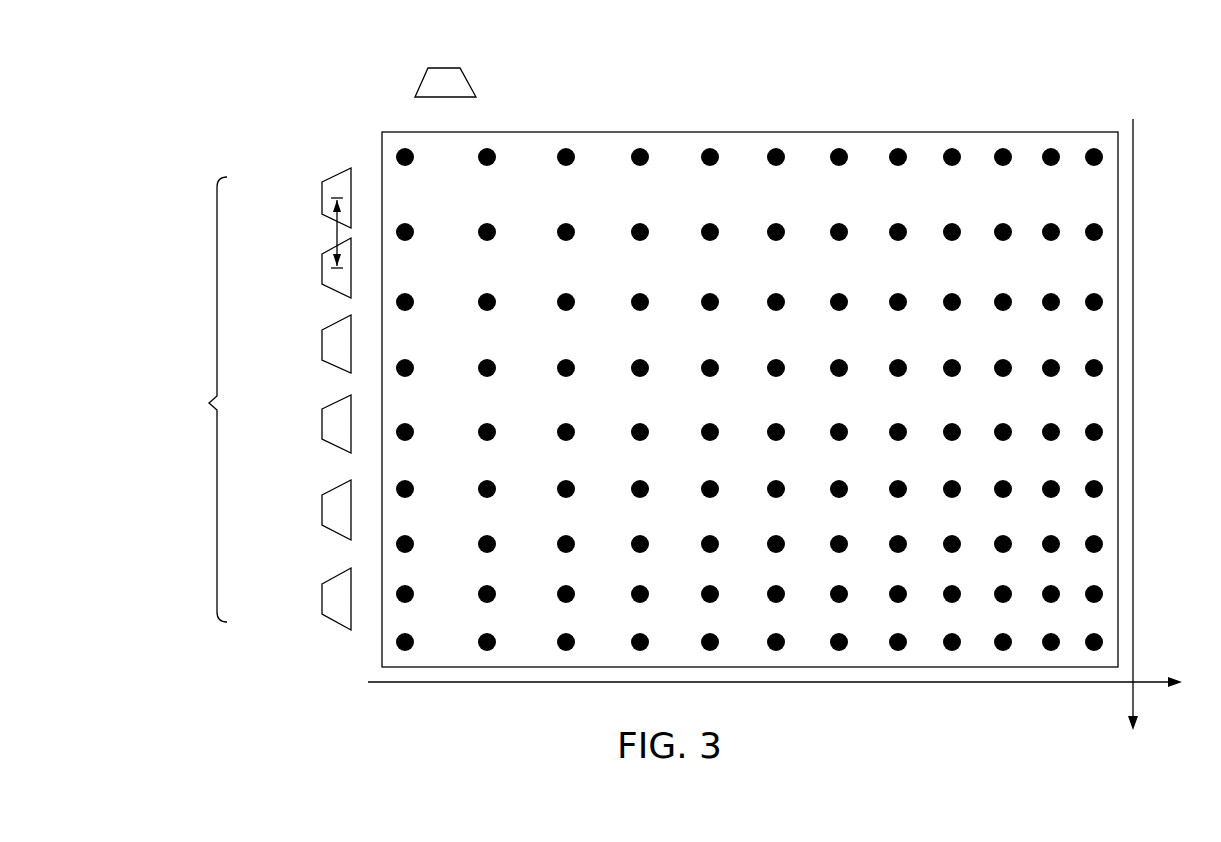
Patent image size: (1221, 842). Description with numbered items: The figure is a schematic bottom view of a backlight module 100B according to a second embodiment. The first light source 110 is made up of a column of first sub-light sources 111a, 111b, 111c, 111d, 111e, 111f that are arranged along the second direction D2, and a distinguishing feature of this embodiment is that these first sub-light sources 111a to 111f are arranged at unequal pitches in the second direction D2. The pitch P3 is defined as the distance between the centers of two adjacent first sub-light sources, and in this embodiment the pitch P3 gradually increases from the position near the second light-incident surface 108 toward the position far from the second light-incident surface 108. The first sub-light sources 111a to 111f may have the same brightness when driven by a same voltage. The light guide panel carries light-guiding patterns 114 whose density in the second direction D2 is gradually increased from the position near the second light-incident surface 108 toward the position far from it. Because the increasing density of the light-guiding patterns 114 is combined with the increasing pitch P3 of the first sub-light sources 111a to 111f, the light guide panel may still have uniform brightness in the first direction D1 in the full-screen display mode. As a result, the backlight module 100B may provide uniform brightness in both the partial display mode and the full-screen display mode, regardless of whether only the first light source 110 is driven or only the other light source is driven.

The backlight module 100B is at (234, 60).
The second light-incident surface 108 is at (396, 128).
The light-guiding patterns 114 is at (411, 142).
The first light source 110 is at (258, 399).
The first sub-light source 111a is at (322, 200).
The first sub-light source 111b is at (322, 270).
The first sub-light source 111c is at (322, 346).
The first sub-light source 111d is at (322, 428).
The first sub-light source 111e is at (322, 512).
The first sub-light source 111f is at (322, 602).
The pitch P3 is at (324, 233).
The first direction D1 is at (1152, 682).
The second direction D2 is at (1130, 703).